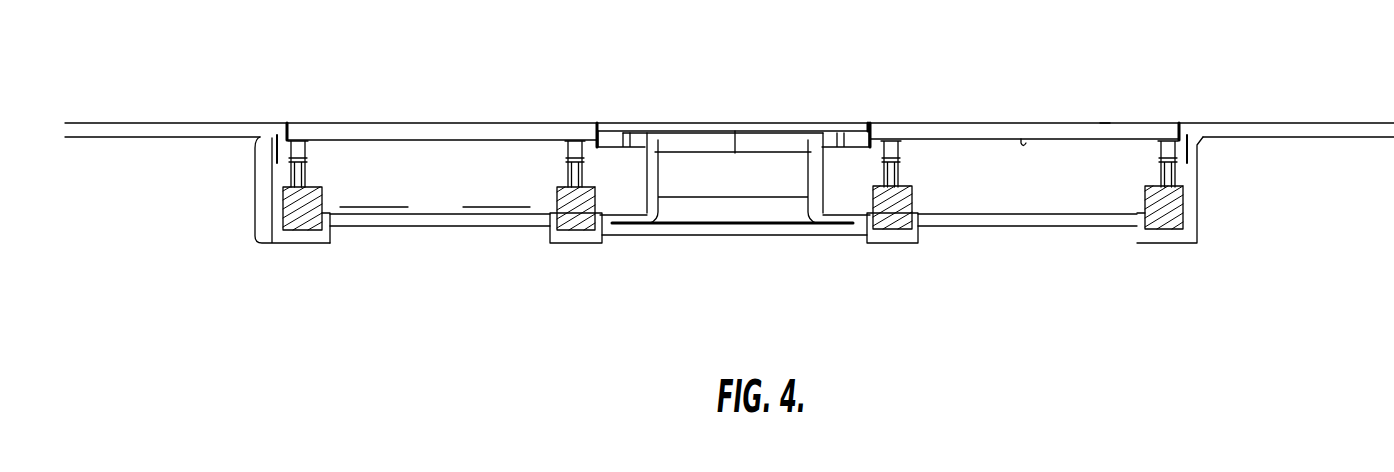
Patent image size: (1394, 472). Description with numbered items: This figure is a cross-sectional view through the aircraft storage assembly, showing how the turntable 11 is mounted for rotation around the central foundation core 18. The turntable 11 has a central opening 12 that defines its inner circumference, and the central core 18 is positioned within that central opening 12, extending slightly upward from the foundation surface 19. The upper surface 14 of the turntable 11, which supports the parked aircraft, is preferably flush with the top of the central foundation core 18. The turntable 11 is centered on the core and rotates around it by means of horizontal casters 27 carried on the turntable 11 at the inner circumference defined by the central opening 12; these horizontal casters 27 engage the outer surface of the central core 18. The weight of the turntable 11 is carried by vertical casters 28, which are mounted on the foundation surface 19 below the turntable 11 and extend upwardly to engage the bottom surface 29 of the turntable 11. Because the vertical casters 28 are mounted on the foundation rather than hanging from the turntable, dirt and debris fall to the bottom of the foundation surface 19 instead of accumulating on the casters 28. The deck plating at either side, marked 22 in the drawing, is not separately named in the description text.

The turntable 11 is at (1103, 130).
The central opening 12 is at (866, 124).
The upper surface 14 is at (476, 123).
The central foundation core 18 is at (724, 128).
The foundation surface 19 is at (395, 218).
The deck plating 22 is at (171, 123).
The horizontal casters 27 is at (613, 130).
The vertical casters 28 is at (302, 180).
The bottom surface 29 is at (477, 140).